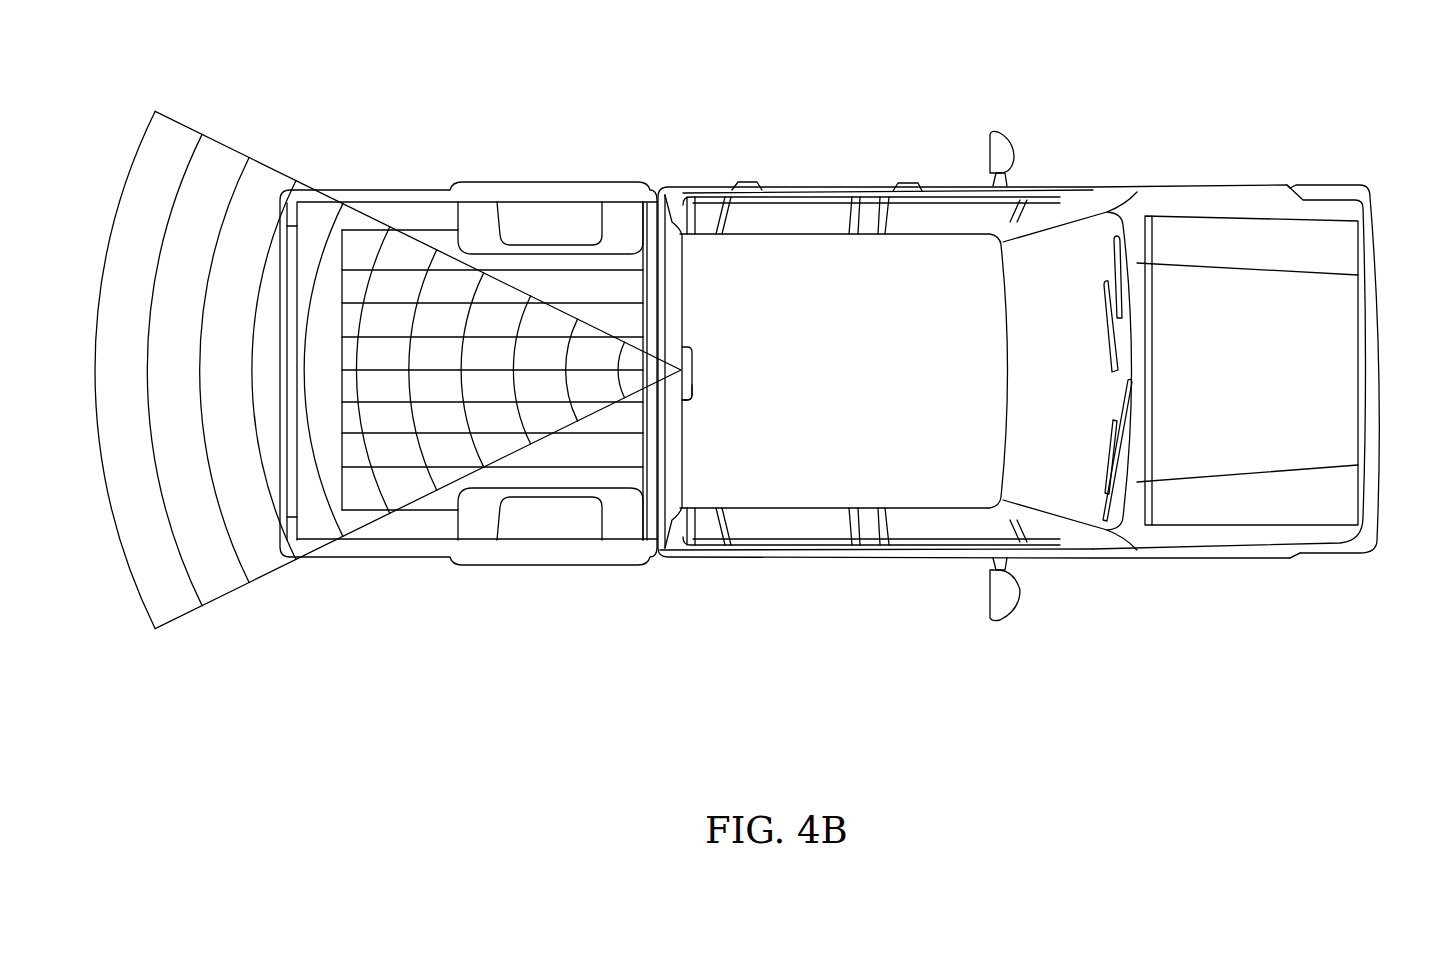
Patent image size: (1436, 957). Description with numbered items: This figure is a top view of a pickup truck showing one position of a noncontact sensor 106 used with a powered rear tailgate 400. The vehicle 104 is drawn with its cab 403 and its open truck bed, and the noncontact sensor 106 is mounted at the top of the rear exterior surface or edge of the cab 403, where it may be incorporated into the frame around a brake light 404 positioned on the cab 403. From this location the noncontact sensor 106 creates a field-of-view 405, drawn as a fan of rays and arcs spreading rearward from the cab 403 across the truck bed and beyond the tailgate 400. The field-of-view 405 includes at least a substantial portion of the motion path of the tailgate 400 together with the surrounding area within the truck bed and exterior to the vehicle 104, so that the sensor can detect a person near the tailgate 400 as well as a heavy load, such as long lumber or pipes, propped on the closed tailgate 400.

The vehicle 104 is at (1320, 138).
The noncontact sensor 106 is at (690, 360).
The powered rear tailgate 400 is at (313, 483).
The cab 403 is at (880, 366).
The brake light 404 is at (692, 388).
The field-of-view 405 is at (230, 122).